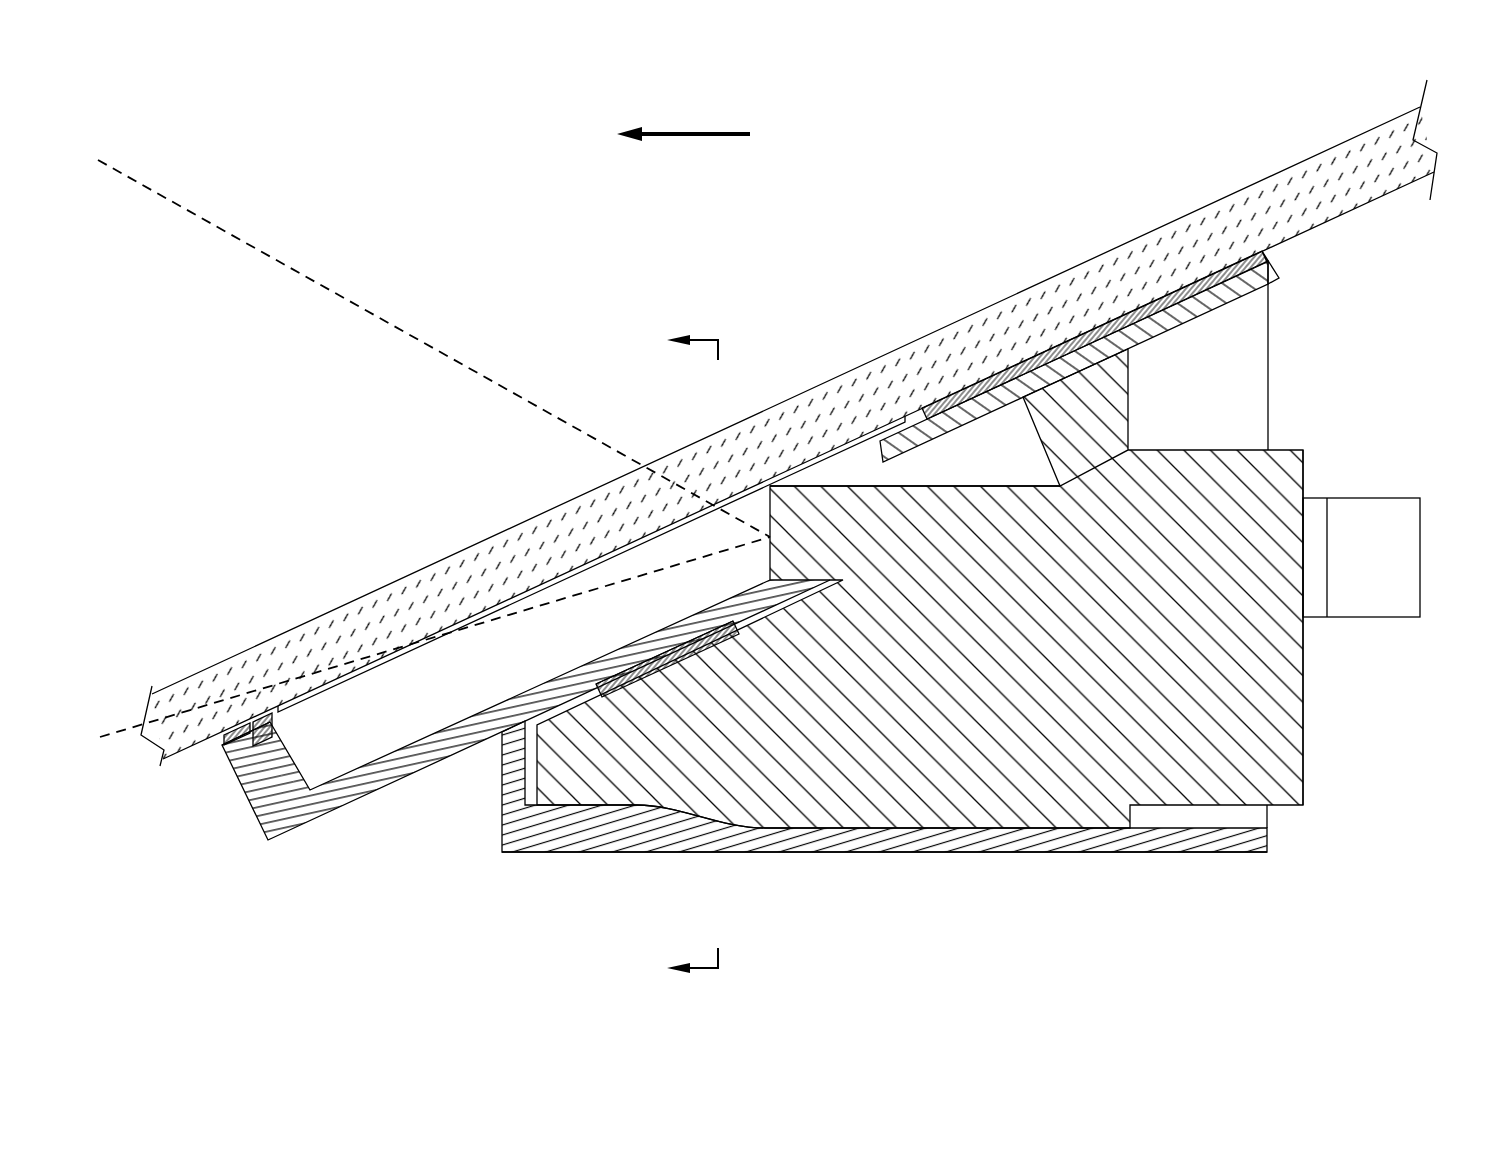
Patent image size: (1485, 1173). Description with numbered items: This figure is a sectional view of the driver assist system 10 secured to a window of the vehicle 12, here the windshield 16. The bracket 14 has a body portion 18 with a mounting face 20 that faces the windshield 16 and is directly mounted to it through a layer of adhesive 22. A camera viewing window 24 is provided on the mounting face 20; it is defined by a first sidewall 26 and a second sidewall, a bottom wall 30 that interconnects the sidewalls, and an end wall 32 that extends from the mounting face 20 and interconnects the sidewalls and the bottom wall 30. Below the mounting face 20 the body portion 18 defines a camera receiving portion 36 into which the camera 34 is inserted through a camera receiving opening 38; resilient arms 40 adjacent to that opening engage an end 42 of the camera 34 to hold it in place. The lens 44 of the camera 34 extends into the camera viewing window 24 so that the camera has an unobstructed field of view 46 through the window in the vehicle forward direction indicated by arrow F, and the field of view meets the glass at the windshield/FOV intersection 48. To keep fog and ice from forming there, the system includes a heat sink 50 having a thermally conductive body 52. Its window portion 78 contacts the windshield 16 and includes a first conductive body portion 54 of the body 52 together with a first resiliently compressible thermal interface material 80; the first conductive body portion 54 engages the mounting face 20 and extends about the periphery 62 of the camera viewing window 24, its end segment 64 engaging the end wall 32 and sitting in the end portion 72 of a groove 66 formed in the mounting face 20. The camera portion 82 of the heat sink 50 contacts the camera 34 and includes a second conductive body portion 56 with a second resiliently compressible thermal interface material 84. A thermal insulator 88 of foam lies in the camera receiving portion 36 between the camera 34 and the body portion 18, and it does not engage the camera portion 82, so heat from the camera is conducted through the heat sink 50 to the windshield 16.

The driver assist system 10 is at (963, 178).
The vehicle 12 is at (789, 423).
The bracket 14 is at (1255, 278).
The windshield 16 is at (1085, 290).
The body portion 18 is at (858, 812).
The mounting face 20 is at (1005, 375).
The layer of adhesive 22 is at (1270, 252).
The camera viewing window 24 is at (703, 528).
The first sidewall 26 is at (427, 703).
The bottom wall 30 is at (526, 738).
The end wall 32 is at (300, 772).
The camera 34 is at (980, 588).
The camera receiving portion 36 is at (1215, 410).
The camera receiving opening 38 is at (1290, 816).
The resilient arms 40 is at (1398, 560).
The end 42 is at (1303, 740).
The lens 44 is at (815, 484).
The field of view 46 is at (440, 352).
The windshield/FOV intersection 48 is at (565, 536).
The heat sink 50 is at (658, 779).
The thermally conductive body 52 is at (668, 653).
The first conductive body portion 54 is at (238, 748).
The second conductive body portion 56 is at (700, 640).
The periphery 62 is at (263, 710).
The end segment 64 is at (256, 748).
The groove 66 is at (212, 805).
The end portion 72 is at (246, 745).
The window portion 78 is at (222, 737).
The first resiliently compressible thermal interface material 80 is at (253, 700).
The camera portion 82 is at (748, 652).
The second resiliently compressible thermal interface material 84 is at (598, 686).
The thermal insulator 88 is at (1000, 815).